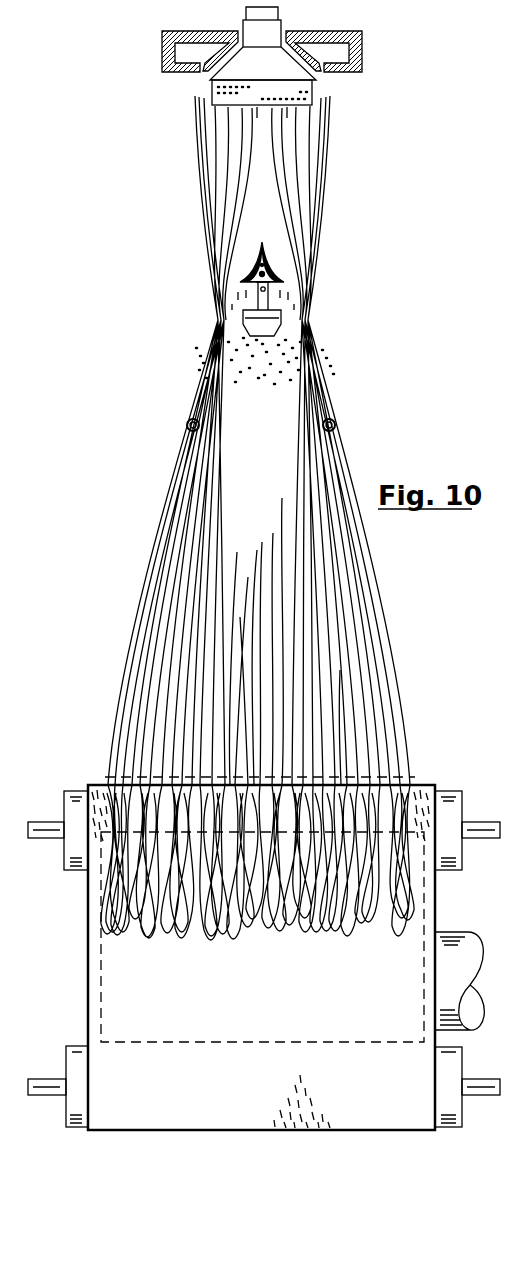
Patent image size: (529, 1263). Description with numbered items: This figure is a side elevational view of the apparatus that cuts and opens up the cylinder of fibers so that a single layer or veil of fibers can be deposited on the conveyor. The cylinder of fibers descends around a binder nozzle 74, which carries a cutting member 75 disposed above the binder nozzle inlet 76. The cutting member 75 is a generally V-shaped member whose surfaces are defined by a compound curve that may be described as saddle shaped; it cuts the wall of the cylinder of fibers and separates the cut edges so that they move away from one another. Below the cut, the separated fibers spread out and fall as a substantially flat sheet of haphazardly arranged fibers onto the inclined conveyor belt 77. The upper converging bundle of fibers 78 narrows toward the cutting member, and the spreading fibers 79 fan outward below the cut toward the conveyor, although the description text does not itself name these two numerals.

The collecting cup 74 is at (282, 318).
The spreading cone 75 is at (266, 262).
The spindle 76 is at (270, 287).
The receiving container 77 is at (437, 908).
The filament tow 78 is at (330, 187).
The spread filaments 79 is at (383, 626).